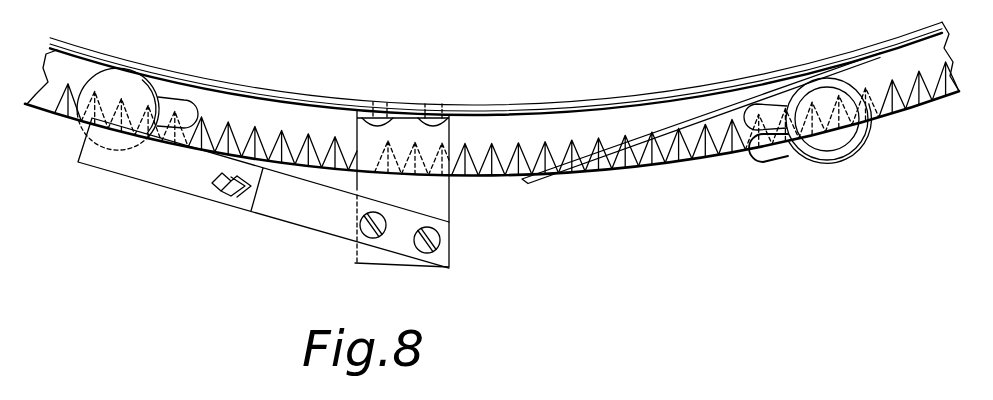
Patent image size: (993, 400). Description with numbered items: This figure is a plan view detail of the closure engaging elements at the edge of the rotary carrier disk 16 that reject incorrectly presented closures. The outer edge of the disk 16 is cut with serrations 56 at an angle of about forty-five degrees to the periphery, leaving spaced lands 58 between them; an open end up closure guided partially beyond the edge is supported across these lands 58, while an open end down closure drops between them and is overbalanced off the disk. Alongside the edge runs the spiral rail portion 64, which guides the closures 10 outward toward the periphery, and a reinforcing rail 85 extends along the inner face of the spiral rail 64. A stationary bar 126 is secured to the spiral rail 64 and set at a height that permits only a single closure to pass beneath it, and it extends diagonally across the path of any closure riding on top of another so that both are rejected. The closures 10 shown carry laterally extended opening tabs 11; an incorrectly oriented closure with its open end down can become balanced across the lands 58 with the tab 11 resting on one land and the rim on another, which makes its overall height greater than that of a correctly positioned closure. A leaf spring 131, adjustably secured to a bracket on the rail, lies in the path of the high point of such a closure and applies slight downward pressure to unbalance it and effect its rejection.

The closure 10 is at (80, 125).
The opening tab 11 is at (173, 102).
The rotary carrier disk 16 is at (952, 40).
The serrations 56 is at (627, 166).
The lands 58 is at (704, 150).
The spiral rail portion 64 is at (570, 114).
The reinforcing rail 85 is at (493, 104).
The stationary bar 126 is at (612, 146).
The leaf spring 131 is at (140, 175).